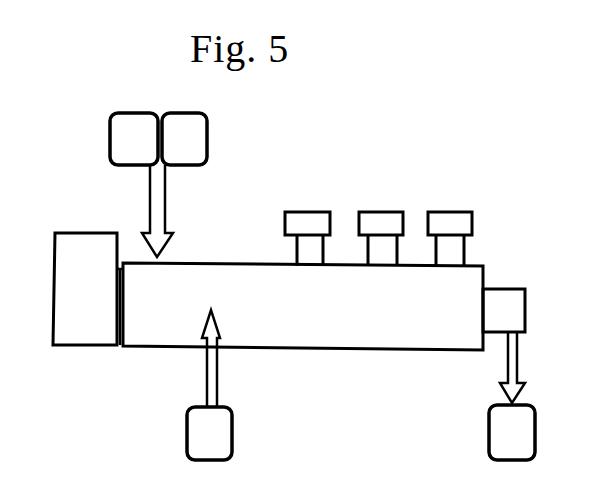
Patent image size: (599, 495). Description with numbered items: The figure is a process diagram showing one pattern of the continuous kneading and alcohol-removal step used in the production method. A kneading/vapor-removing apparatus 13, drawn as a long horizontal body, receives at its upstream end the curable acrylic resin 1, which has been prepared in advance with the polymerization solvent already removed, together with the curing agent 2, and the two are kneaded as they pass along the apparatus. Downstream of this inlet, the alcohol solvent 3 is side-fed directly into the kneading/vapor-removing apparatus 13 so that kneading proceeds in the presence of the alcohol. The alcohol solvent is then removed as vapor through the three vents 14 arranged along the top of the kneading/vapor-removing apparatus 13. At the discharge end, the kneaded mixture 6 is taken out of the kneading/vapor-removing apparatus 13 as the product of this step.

The curable acrylic resin (A) 1 is at (141, 185).
The curing agent (B) 2 is at (184, 139).
The alcohol solvent 3 is at (209, 385).
The kneaded mixture 6 is at (512, 396).
The kneading/vapor-removing apparatus 13 is at (335, 348).
The vents 14 is at (432, 212).